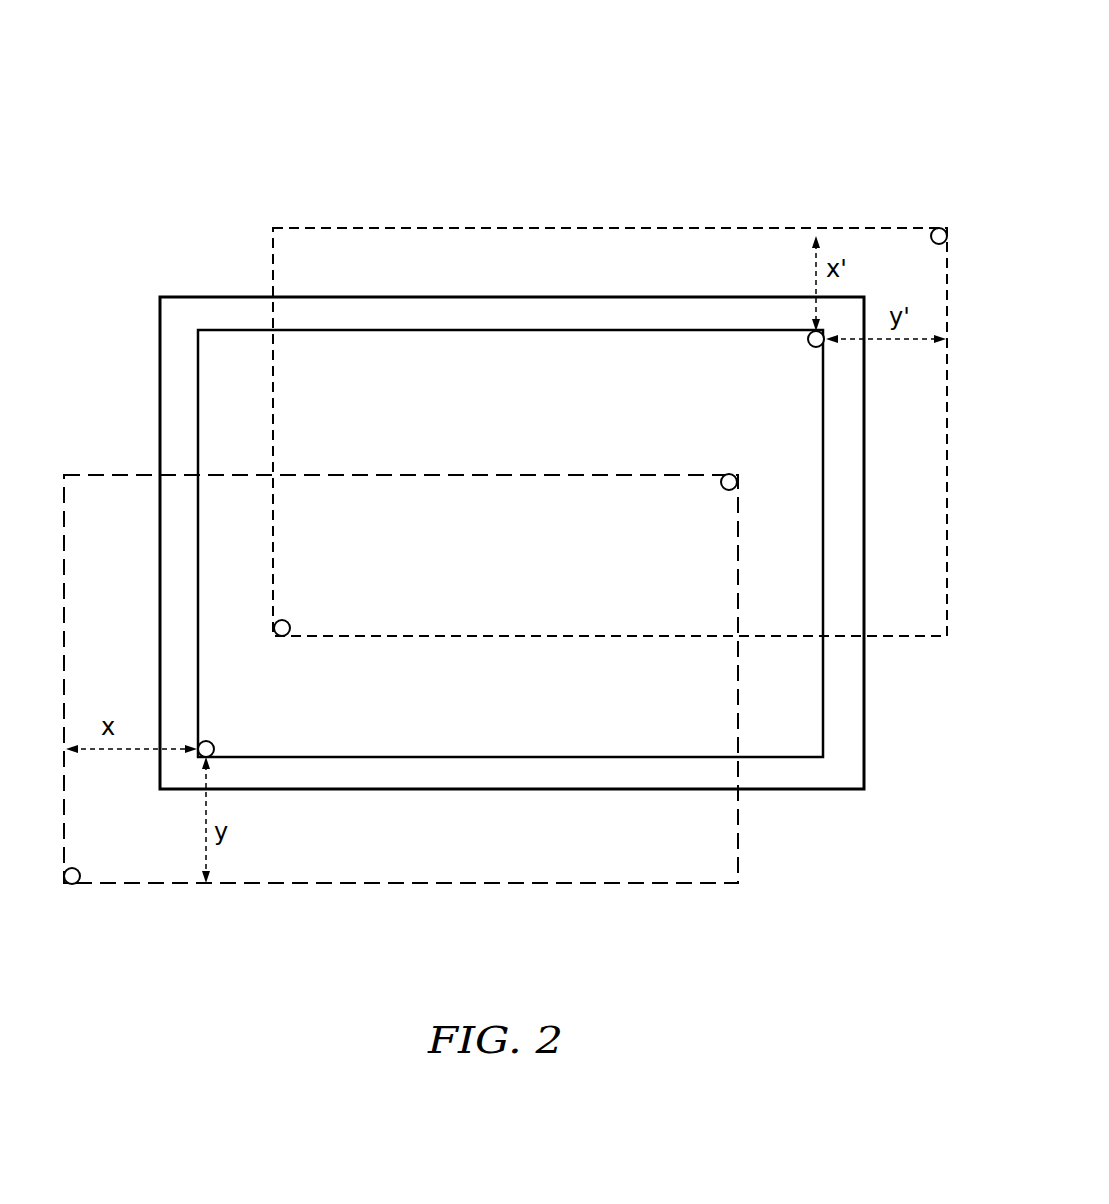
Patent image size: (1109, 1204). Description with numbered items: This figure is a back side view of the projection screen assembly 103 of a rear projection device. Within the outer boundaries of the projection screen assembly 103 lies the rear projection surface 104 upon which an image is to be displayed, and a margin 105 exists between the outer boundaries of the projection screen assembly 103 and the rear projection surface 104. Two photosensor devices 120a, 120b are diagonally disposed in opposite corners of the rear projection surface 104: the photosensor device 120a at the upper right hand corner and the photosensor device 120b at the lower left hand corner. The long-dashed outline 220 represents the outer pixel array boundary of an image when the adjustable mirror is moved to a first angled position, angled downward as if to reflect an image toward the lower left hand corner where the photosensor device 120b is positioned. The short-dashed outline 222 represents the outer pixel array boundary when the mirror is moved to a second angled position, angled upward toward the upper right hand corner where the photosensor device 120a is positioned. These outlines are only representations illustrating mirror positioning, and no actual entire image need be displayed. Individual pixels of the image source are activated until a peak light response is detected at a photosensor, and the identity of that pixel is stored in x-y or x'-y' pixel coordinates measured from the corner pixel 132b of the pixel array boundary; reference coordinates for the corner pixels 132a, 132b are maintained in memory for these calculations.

The projection screen assembly 103 is at (868, 52).
The rear projection surface 104 is at (498, 533).
The margin 105 is at (213, 303).
The photosensor device 120a is at (810, 347).
The photosensor device 120b is at (213, 745).
The corner pixel 132a is at (937, 228).
The corner pixel 132b is at (280, 637).
The long-dashed outline 220 is at (246, 886).
The short-dashed outline 222 is at (509, 228).